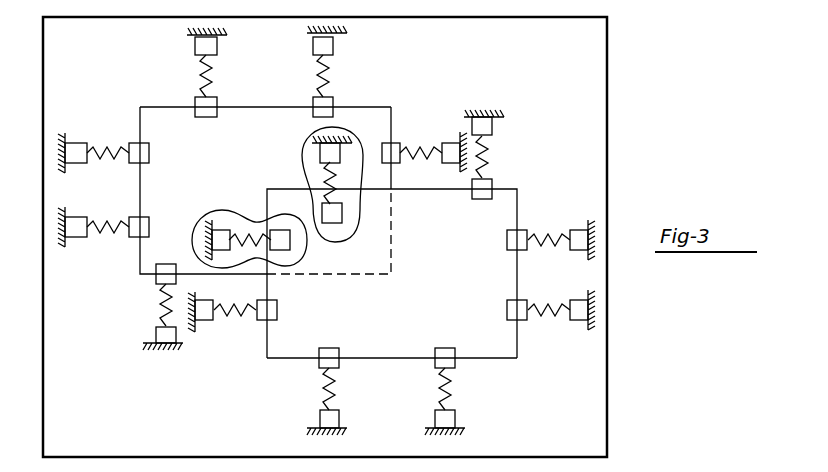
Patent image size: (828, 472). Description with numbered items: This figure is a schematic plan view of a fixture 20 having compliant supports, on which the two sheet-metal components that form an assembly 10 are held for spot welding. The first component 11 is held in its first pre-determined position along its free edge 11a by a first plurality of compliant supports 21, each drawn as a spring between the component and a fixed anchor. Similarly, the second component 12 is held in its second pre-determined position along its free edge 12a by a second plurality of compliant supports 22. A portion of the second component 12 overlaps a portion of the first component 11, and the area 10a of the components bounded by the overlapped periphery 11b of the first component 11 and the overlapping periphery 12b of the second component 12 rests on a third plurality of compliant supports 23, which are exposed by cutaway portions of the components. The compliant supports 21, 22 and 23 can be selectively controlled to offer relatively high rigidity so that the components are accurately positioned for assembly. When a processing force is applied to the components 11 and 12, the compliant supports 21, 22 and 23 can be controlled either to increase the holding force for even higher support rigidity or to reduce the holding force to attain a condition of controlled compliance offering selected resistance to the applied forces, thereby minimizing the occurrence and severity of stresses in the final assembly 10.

The assembly 10 is at (510, 112).
The area of the components 10a is at (277, 202).
The first component 11 is at (347, 125).
The free periphery of the first component 11a is at (152, 105).
The overlapped periphery of the first component 11b is at (357, 275).
The second component 12 is at (495, 207).
The free periphery of the second component 12a is at (374, 360).
The overlapping periphery of the second component 12b is at (258, 156).
The fixture 20 is at (577, 418).
The first plurality of compliant supports 21 is at (317, 73).
The second plurality of compliant supports 22 is at (486, 157).
The third plurality of compliant supports 23 is at (335, 184).